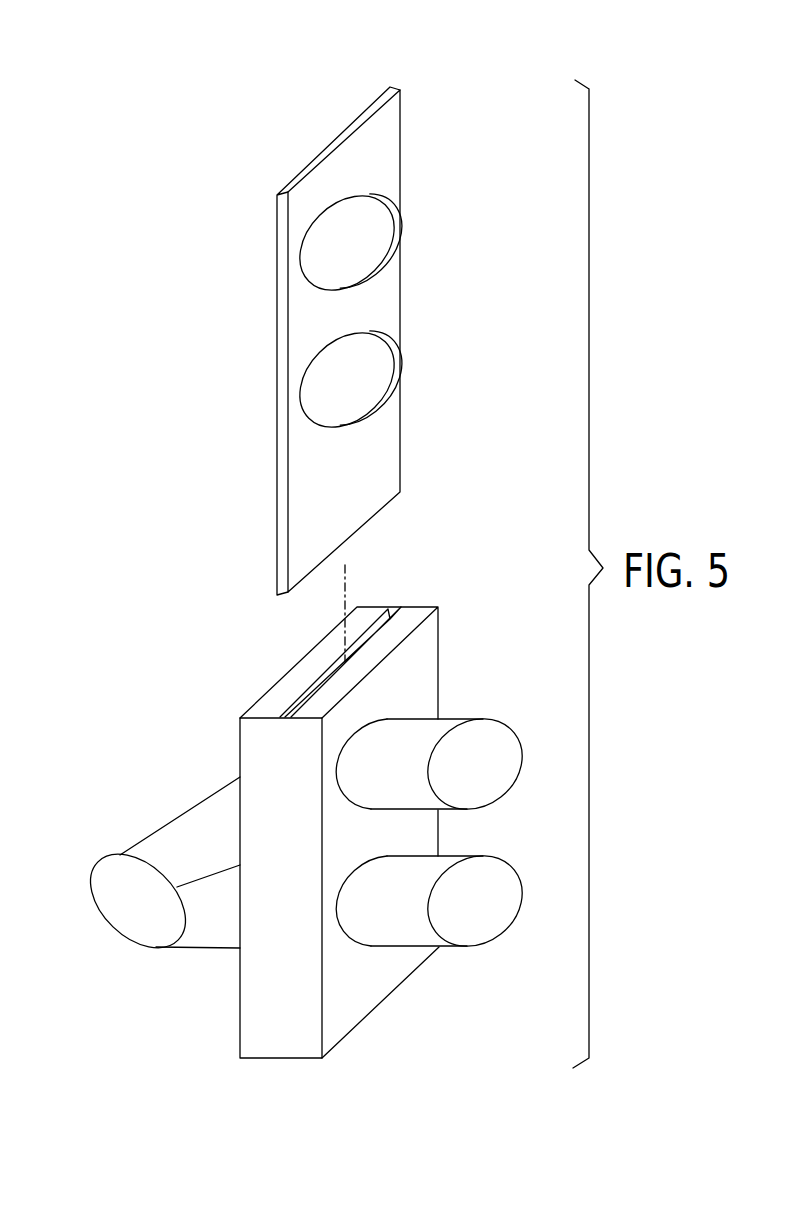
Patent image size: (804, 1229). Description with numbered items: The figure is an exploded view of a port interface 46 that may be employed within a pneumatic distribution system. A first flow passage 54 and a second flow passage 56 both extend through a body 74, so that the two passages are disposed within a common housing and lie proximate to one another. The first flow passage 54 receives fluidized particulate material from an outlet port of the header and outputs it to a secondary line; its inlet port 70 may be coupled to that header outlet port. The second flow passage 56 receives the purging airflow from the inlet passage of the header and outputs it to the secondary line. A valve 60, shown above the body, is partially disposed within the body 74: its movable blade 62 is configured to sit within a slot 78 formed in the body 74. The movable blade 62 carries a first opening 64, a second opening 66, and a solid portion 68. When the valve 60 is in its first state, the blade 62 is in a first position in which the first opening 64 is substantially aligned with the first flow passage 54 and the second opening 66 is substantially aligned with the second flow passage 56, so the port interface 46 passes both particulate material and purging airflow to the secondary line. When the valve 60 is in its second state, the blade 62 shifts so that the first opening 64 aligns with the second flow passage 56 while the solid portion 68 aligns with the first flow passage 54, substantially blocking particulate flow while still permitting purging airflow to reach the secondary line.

The valve 60 is at (437, 90).
The movable blade 62 is at (337, 142).
The first opening 64 is at (306, 370).
The second opening 66 is at (306, 233).
The solid portion 68 is at (342, 487).
The port interface 46 is at (467, 593).
The body 74 is at (282, 1058).
The slot 78 is at (315, 681).
The second flow passage 56 is at (458, 720).
The first flow passage 54 is at (395, 950).
The inlet port 70 is at (500, 927).